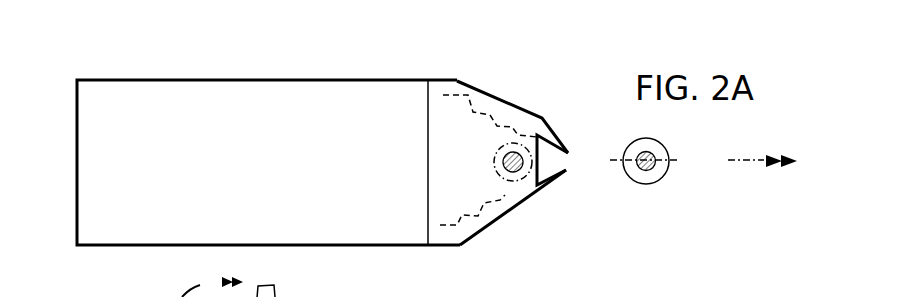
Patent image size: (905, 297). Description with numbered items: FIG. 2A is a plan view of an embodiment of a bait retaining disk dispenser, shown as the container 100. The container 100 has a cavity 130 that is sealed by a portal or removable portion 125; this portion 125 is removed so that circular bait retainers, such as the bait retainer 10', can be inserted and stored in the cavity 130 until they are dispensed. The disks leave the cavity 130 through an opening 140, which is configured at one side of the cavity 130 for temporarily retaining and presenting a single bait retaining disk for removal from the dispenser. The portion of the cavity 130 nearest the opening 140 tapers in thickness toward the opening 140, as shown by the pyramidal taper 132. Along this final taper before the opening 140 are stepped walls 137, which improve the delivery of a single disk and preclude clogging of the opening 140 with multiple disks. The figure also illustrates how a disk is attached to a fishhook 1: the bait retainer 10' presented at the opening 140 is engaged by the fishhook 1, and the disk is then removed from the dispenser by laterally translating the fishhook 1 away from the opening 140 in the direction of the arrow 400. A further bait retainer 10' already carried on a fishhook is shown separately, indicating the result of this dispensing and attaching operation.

The container 100 is at (553, 50).
The removable portion 125 is at (107, 90).
The cavity 130 is at (290, 152).
The pyramidal taper 132 is at (530, 98).
The stepped walls 137 is at (500, 200).
The opening 140 is at (560, 170).
The arrow 400 is at (703, 160).
The bait retainer 10' is at (407, 240).
The fishhook 1 is at (648, 171).